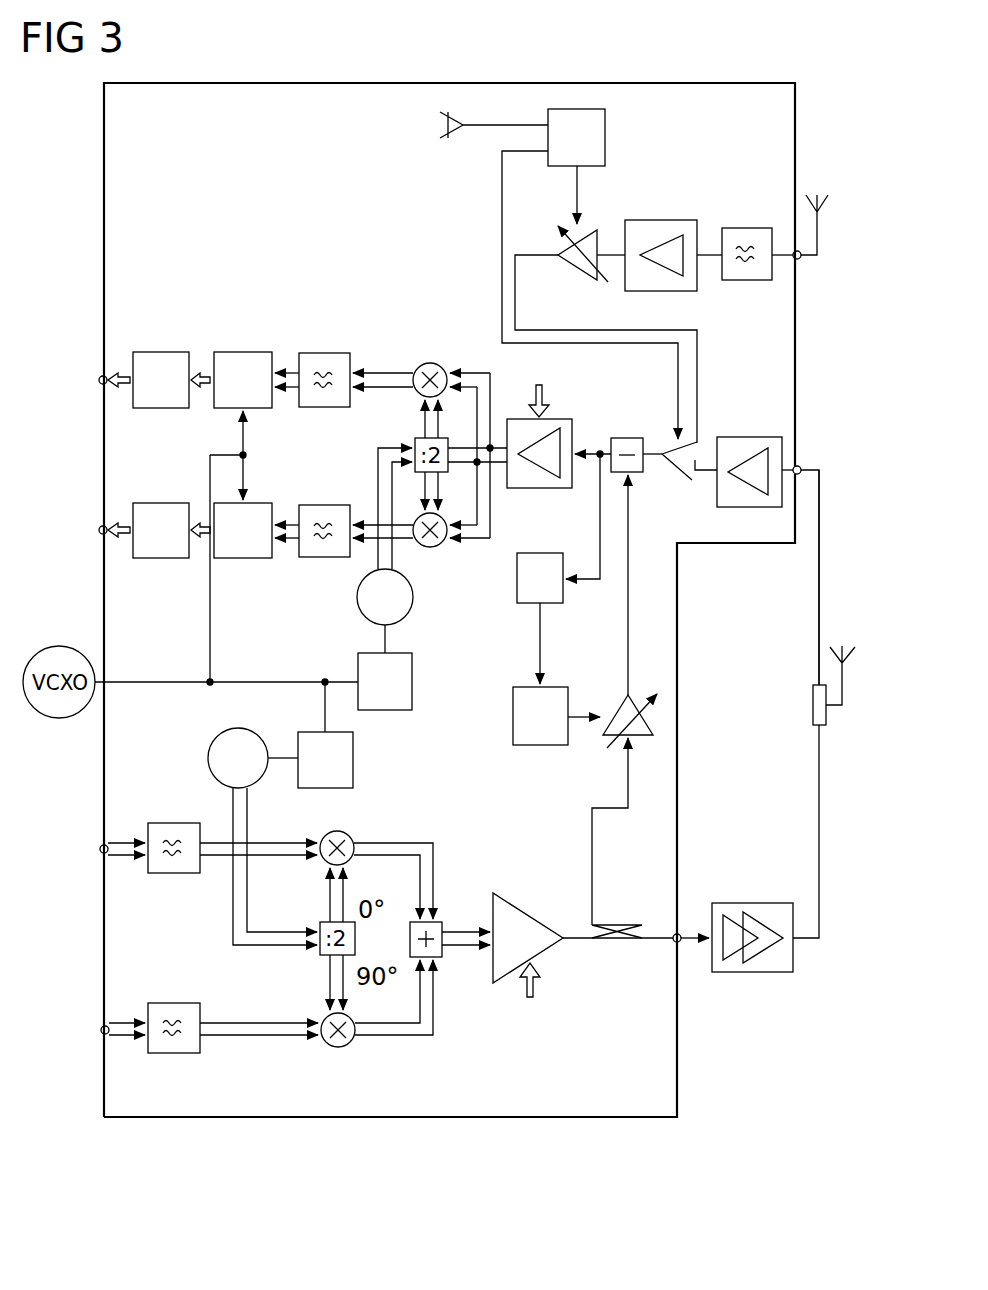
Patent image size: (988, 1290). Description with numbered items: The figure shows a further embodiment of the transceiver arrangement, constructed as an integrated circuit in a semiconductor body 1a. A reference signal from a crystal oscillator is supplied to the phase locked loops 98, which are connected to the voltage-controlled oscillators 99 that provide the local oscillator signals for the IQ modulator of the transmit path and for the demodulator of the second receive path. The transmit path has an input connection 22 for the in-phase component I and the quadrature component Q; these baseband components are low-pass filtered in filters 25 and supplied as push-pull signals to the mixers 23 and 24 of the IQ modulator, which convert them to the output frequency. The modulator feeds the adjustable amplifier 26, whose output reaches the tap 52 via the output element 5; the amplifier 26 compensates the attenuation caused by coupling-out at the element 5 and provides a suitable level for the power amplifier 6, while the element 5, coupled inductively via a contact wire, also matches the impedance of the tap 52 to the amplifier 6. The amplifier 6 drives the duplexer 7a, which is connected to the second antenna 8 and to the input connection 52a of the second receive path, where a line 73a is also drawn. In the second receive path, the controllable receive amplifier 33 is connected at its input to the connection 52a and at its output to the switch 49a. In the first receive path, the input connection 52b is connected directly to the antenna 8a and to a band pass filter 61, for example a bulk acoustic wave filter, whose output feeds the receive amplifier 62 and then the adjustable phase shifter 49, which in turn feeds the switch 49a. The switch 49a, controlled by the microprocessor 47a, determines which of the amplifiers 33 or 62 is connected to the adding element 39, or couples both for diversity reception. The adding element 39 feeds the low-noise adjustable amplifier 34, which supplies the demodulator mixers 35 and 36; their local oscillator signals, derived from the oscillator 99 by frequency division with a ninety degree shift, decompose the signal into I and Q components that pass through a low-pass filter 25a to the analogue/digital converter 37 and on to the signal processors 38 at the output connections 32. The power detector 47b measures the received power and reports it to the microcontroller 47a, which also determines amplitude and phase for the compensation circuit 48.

The semiconductor body 1a is at (392, 1117).
The output element 5 is at (620, 925).
The power amplifier 6 is at (757, 903).
The duplexer 7a is at (813, 705).
The second antenna 8 is at (849, 655).
The antenna 8a is at (823, 210).
The input connection 22 is at (100, 845).
The mixer 23 is at (349, 836).
The mixer 24 is at (338, 1047).
The filter 25 is at (175, 873).
The low-pass filter 25a is at (325, 353).
The amplifier 26 is at (536, 908).
The output terminals 32 is at (100, 376).
The controllable receive amplifier 33 is at (750, 437).
The low-noise adjustable amplifier 34 is at (540, 488).
The mixer 35 is at (430, 363).
The mixer 36 is at (430, 547).
The analogue/digital converter 37 is at (243, 352).
The signal processor 38 is at (160, 352).
The adding element 39 is at (627, 438).
The microcontroller 47a is at (605, 140).
The power detector 47b is at (448, 138).
The compensation circuit 48 is at (645, 738).
The adjustable phase shifter 49 is at (572, 280).
The switch 49a is at (680, 480).
The output tap 52 is at (674, 943).
The input connection 52a is at (800, 466).
The input connection 52b is at (798, 260).
The band pass filter 61 is at (747, 228).
The receive amplifier 62 is at (660, 220).
The connection line 73a is at (815, 685).
The phase locked loop 98 is at (412, 683).
The voltage-controlled oscillator 99 is at (357, 597).